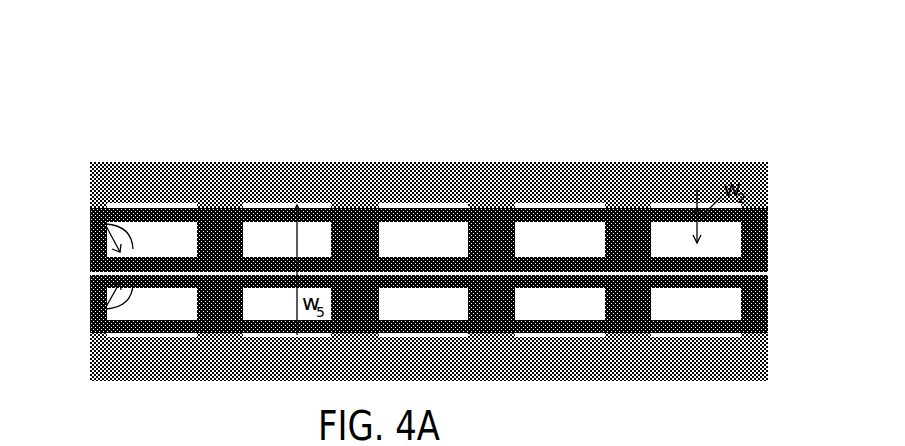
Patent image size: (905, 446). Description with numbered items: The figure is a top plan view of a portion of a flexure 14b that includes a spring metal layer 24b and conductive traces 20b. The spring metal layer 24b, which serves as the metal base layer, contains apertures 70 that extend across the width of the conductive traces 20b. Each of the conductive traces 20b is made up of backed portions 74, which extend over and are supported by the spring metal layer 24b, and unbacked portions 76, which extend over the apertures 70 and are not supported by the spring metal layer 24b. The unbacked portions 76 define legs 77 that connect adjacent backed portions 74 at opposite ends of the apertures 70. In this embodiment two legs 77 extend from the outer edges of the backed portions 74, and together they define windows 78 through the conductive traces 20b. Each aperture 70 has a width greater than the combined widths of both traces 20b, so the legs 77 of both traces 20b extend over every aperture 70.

The flexure 14b is at (100, 102).
The spring metal layer 24b is at (622, 173).
The apertures 70 is at (320, 207).
The backed portions 74 is at (223, 213).
The unbacked portions 76 is at (88, 240).
The windows 78 is at (558, 228).
The legs 77 is at (88, 205).
The conductive traces 20b is at (772, 250).